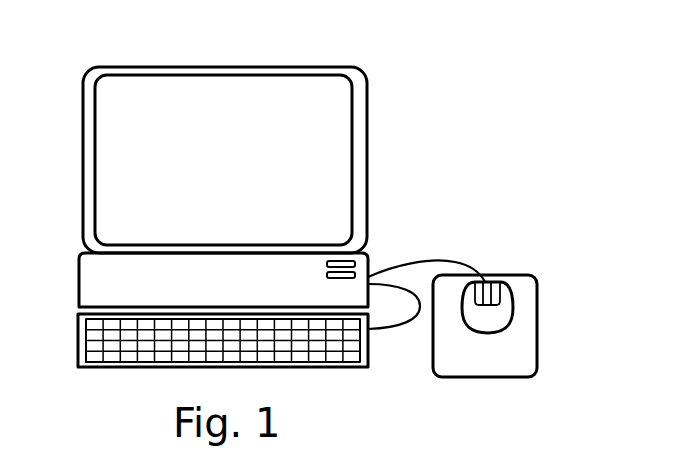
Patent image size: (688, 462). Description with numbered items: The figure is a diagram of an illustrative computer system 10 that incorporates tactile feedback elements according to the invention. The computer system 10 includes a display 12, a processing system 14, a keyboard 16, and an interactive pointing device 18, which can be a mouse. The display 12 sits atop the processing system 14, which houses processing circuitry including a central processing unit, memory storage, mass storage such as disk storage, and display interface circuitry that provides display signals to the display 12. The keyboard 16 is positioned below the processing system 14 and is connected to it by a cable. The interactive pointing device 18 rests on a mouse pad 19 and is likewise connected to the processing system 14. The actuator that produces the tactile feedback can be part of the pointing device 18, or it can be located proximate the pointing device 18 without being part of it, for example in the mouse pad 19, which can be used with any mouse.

The computer system 10 is at (409, 76).
The display 12 is at (367, 218).
The processing system 14 is at (368, 265).
The keyboard 16 is at (368, 355).
The interactive pointing device 18 is at (483, 335).
The mouse pad 19 is at (537, 303).